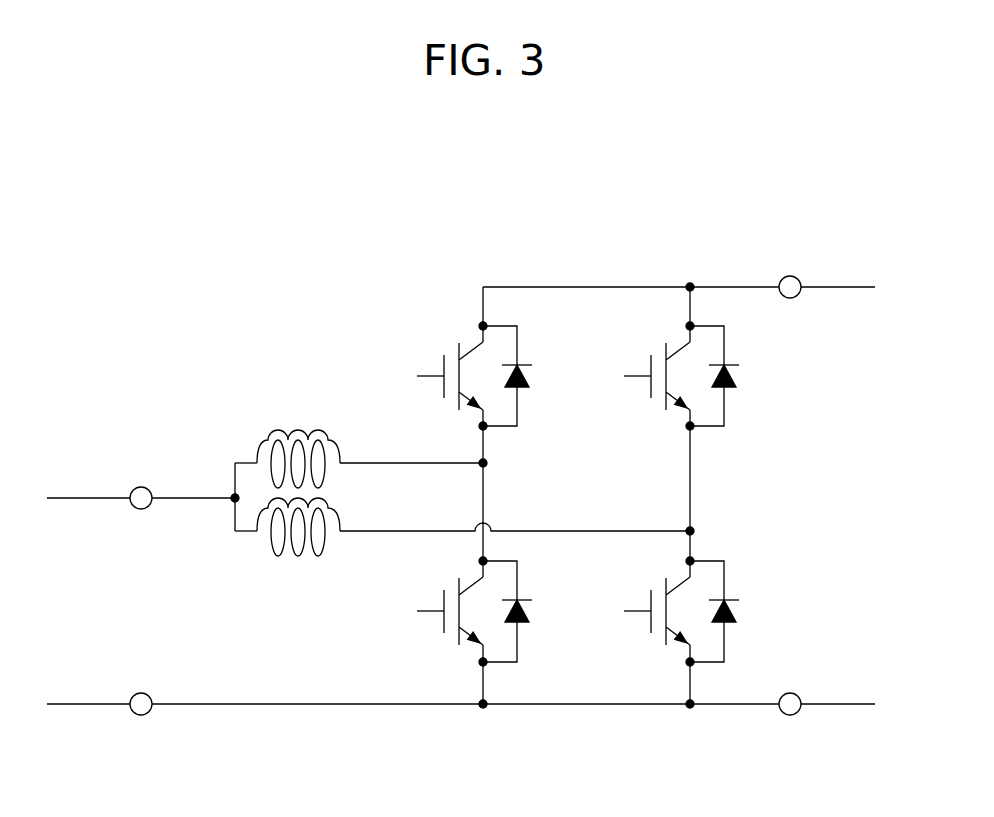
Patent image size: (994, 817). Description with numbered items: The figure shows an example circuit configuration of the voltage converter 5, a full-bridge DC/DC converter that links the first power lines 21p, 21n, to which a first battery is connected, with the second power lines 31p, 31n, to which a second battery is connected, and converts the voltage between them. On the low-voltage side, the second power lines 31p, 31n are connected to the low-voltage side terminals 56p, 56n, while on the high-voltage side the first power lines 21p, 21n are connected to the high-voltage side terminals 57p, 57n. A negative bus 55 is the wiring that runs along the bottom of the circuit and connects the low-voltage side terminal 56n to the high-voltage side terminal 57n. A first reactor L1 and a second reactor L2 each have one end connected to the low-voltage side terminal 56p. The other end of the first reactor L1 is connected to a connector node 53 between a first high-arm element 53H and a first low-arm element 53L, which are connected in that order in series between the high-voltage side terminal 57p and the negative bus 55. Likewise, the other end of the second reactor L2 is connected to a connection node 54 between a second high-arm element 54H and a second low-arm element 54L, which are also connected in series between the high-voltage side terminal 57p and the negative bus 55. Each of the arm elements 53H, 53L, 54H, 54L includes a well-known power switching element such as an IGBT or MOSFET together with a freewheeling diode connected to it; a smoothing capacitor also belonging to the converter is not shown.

The voltage converter 5 is at (230, 248).
The first high-arm element 53H is at (412, 347).
The second high-arm element 54H is at (613, 352).
The first low-arm element 53L is at (397, 599).
The second low-arm element 54L is at (613, 599).
The first reactor L1 is at (312, 440).
The second reactor L2 is at (300, 556).
The connector node 53 is at (486, 463).
The connection node 54 is at (693, 532).
The second power line 31p is at (63, 498).
The second power line 31n is at (65, 704).
The low-voltage side terminal 56p is at (145, 488).
The low-voltage side terminal 56n is at (145, 694).
The negative bus 55 is at (365, 704).
The high-voltage side terminal 57p is at (791, 277).
The high-voltage side terminal 57n is at (791, 694).
The first power line 21p is at (860, 287).
The first power line 21n is at (858, 704).